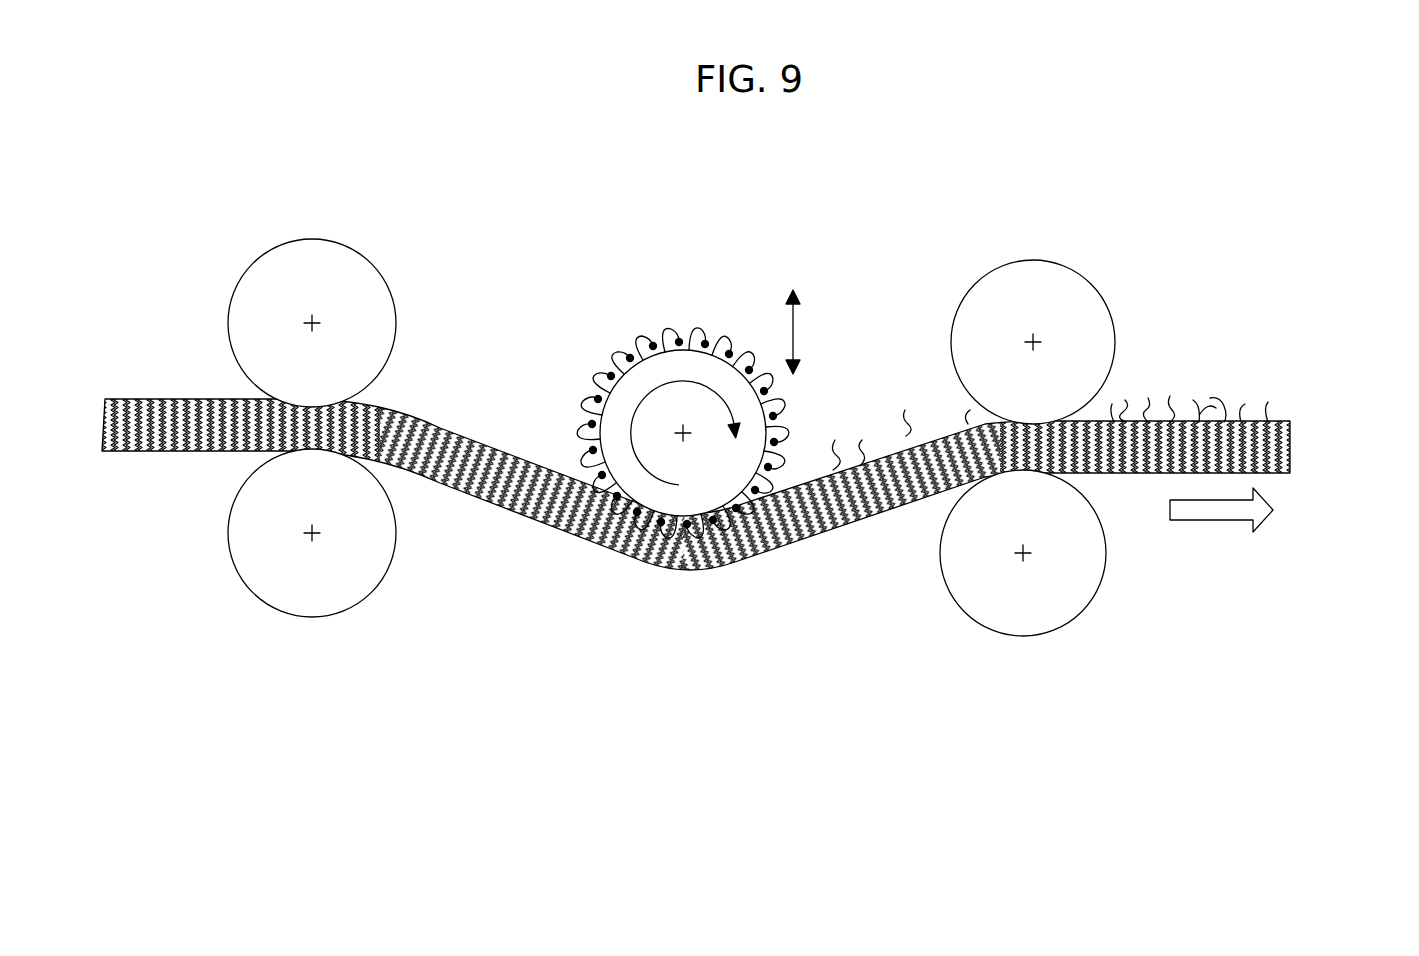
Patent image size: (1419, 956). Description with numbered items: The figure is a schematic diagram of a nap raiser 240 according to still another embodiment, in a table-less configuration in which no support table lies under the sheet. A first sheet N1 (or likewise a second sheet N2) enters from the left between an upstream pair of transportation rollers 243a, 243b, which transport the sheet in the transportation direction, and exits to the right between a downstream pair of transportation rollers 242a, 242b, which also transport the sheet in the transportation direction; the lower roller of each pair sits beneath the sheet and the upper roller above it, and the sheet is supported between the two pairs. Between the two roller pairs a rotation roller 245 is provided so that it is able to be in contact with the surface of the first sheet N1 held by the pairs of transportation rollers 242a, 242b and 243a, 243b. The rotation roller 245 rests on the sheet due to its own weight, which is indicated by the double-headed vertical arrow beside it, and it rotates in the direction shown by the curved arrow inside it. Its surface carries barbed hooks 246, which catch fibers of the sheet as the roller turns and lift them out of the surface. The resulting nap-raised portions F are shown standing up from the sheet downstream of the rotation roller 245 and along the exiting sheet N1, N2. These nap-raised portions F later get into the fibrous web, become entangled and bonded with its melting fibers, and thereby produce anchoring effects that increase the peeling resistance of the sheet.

The nap raiser 240 is at (150, 188).
The transportation roller 243b is at (263, 250).
The transportation roller 243a is at (265, 604).
The transportation roller 242b is at (987, 272).
The transportation roller 242a is at (987, 620).
The rotation roller 245 is at (632, 362).
The barbed hooks 246 is at (632, 352).
The nap-raised portions F is at (876, 430).
The first sheet N1 is at (756, 484).
The second sheet N2 is at (1292, 442).